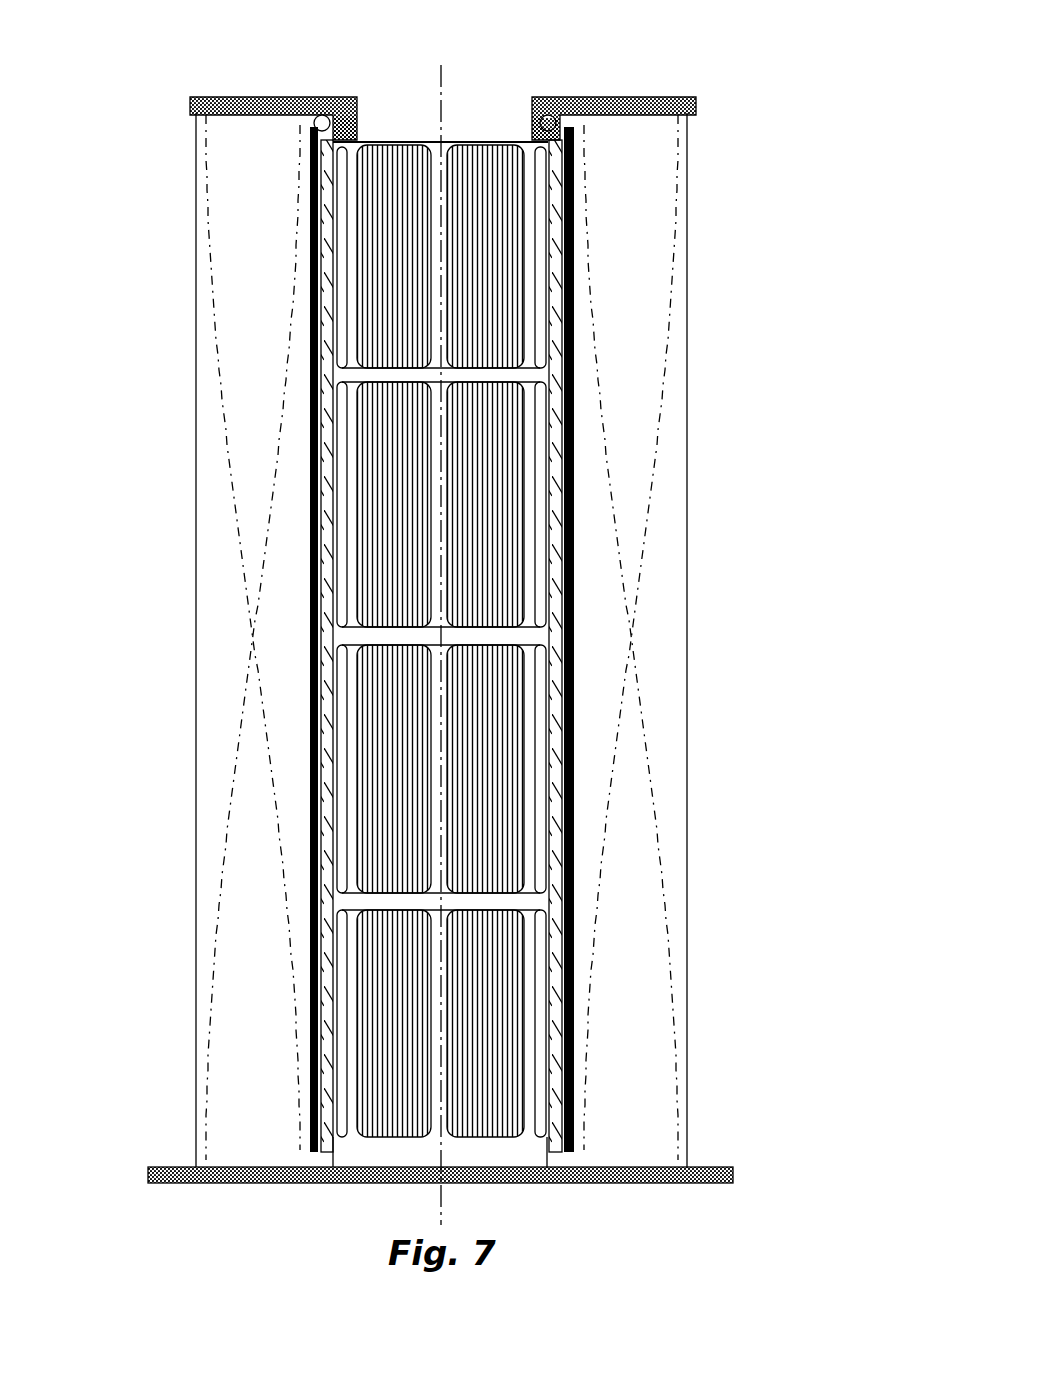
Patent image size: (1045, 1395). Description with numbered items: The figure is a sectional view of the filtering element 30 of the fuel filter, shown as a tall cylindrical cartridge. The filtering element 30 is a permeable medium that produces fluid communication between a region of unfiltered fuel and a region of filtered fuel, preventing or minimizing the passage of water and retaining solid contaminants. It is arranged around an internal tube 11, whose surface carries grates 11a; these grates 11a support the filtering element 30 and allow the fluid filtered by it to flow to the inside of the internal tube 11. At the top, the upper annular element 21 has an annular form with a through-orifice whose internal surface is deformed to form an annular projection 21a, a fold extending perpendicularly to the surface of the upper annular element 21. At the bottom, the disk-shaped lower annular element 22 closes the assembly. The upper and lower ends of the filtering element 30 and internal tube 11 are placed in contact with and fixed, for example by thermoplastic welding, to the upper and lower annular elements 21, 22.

The internal tube 11 is at (440, 865).
The grates 11a is at (563, 640).
The upper annular element 21 is at (262, 100).
The annular projection 21a is at (538, 128).
The lower annular element 22 is at (253, 1173).
The filtering element 30 is at (705, 242).